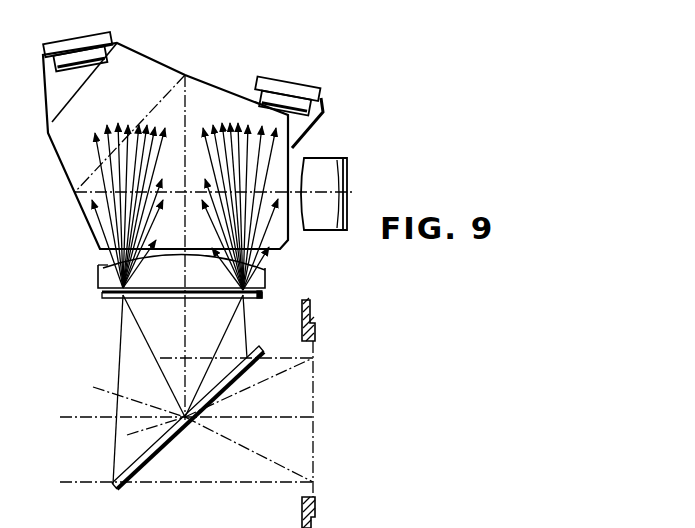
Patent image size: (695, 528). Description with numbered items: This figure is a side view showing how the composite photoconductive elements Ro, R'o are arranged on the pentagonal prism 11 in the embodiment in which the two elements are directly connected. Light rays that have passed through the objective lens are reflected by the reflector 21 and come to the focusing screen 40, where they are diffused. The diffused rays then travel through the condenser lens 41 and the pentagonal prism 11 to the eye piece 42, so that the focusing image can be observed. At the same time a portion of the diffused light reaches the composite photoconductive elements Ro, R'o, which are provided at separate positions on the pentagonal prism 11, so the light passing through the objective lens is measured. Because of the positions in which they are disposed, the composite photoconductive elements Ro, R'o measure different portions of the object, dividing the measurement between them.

The pentagonal prism 11 is at (150, 68).
The reflector 21 is at (141, 466).
The focusing screen 40 is at (264, 296).
The condenser lens 41 is at (263, 273).
The eye piece 42 is at (324, 164).
The composite photoconductive element Ro is at (291, 80).
The composite photoconductive element R'o is at (79, 40).